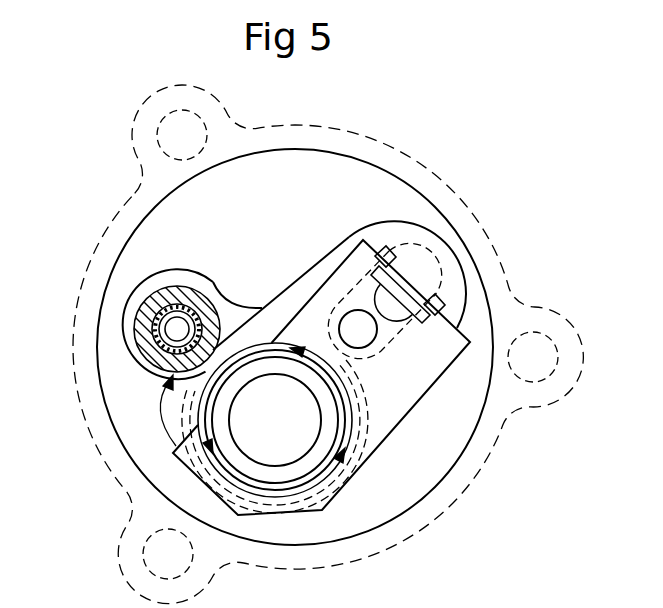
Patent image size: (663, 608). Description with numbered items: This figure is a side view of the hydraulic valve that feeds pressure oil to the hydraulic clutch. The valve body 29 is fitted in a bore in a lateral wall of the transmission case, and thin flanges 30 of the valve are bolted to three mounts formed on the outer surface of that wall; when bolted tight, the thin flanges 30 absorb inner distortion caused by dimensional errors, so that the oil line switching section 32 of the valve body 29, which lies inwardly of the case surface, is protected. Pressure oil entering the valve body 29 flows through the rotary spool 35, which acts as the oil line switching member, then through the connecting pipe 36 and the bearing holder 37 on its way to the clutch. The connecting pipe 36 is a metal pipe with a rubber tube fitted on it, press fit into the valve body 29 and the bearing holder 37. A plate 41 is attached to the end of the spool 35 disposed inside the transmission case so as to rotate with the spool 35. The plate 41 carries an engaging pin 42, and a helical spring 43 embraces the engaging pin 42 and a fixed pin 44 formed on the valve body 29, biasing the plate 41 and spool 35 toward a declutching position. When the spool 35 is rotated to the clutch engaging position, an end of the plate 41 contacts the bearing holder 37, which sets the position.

The valve body 29 is at (358, 172).
The thin flanges 30 is at (499, 258).
The oil line switching section 32 is at (278, 300).
The rotary spool 35 is at (303, 433).
The connecting pipe 36 is at (150, 338).
The bearing holder 37 is at (147, 309).
The plate 41 is at (450, 358).
The engaging pin 42 is at (350, 323).
The helical spring 43 is at (388, 418).
The fixed pin 44 is at (388, 276).